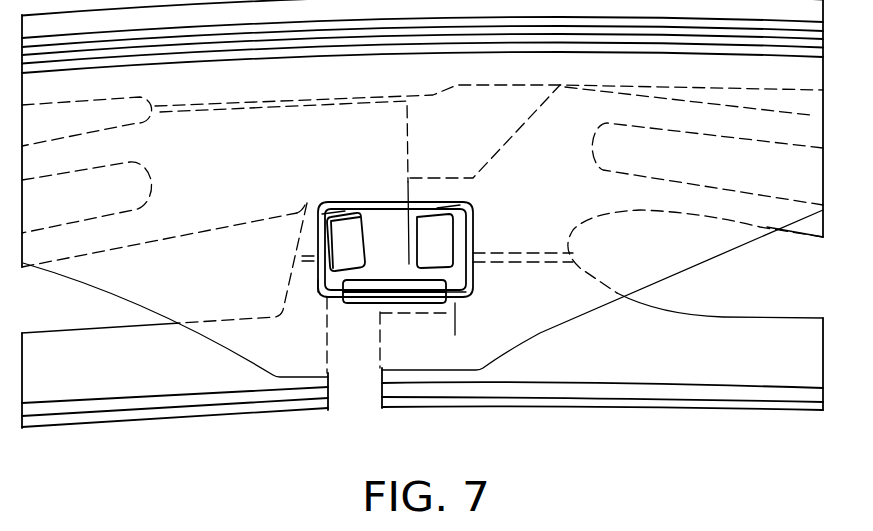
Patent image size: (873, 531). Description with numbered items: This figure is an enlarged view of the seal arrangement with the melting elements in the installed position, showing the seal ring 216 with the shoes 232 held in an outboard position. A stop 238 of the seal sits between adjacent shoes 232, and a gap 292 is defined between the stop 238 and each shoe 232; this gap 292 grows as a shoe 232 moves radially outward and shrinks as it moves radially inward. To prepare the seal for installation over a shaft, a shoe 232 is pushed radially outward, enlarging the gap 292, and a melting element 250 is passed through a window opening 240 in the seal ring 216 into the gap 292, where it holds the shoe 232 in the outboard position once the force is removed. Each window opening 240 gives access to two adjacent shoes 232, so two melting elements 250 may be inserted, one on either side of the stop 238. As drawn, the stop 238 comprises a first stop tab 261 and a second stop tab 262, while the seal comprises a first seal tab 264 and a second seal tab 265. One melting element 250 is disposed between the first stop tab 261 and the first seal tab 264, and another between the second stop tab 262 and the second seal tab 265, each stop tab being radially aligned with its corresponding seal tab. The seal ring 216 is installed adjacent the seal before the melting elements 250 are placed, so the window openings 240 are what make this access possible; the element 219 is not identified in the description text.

The seal ring 216 is at (556, 328).
The rib 219 is at (600, 300).
The shoe 232 is at (200, 405).
The stop 238 is at (383, 284).
The window opening 240 is at (455, 335).
The melting element 250 is at (358, 205).
The first stop tab 261 is at (460, 288).
The second stop tab 262 is at (325, 288).
The first seal tab 264 is at (437, 208).
The second seal tab 265 is at (342, 210).
The gap 292 is at (470, 243).